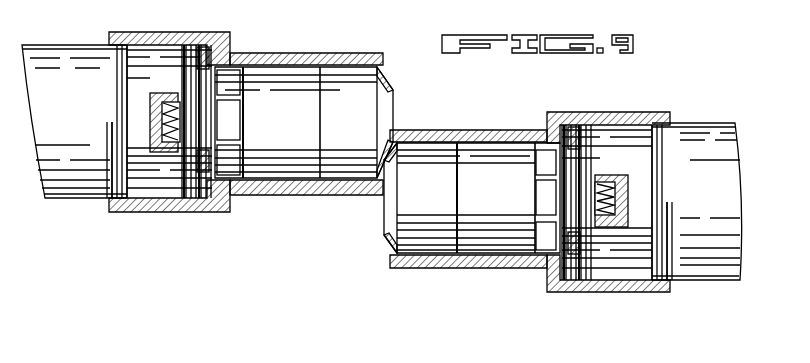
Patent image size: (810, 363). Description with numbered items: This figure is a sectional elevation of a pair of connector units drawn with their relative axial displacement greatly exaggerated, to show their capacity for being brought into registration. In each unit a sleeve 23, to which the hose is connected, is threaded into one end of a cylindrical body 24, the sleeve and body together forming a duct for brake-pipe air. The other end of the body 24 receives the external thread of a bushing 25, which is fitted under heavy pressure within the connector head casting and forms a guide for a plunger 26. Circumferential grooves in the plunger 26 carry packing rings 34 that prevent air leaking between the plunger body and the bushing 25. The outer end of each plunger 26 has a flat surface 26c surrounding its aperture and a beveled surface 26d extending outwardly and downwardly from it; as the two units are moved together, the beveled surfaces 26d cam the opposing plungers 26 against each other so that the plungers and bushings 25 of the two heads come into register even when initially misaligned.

The sleeve 23 is at (60, 55).
The cylindrical body 24 is at (160, 33).
The bushing 25 is at (352, 53).
The plunger 26 is at (462, 119).
The flat surface 26c is at (395, 105).
The beveled surface 26d is at (388, 84).
The packing rings 34 is at (322, 120).